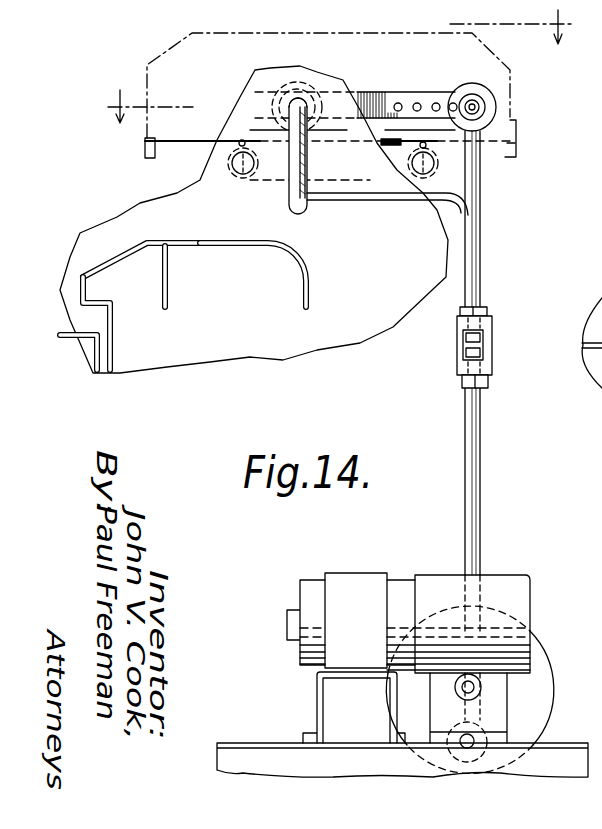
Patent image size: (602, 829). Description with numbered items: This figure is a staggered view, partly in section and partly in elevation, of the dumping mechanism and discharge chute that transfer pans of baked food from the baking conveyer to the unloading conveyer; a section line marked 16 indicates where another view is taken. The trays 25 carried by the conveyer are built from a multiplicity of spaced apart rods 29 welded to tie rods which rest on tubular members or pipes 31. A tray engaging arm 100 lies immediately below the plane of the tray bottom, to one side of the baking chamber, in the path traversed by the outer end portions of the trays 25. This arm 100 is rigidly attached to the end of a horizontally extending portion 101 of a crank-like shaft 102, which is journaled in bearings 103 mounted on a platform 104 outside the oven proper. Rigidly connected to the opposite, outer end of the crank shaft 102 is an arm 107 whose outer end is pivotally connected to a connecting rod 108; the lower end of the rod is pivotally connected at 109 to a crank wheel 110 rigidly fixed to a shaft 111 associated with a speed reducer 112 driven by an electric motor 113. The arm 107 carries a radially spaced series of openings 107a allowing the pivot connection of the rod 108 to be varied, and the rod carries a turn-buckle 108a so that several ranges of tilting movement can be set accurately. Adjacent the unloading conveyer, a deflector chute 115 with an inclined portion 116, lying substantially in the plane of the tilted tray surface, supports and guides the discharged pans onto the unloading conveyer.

The section line 16 is at (342, 66).
The trays 25 is at (497, 97).
The spaced apart rods 29 is at (188, 143).
The tubular members or pipes 31 is at (236, 170).
The tray engaging arm 100 is at (383, 199).
The horizontally extending portion 101 is at (288, 207).
The crank-like shaft 102 is at (303, 100).
The bearings 103 is at (280, 90).
The platform 104 is at (388, 146).
The arm 107 is at (398, 82).
The openings 107a is at (421, 104).
The connecting rod 108 is at (480, 268).
The turn-buckle 108a is at (492, 337).
The pivot connection 109 is at (510, 729).
The crank wheel 110 is at (533, 670).
The shaft 111 is at (481, 689).
The speed reducer 112 is at (530, 602).
The electric motor 113 is at (370, 552).
The deflector chute 115 is at (233, 250).
The inclined portion 116 is at (113, 258).